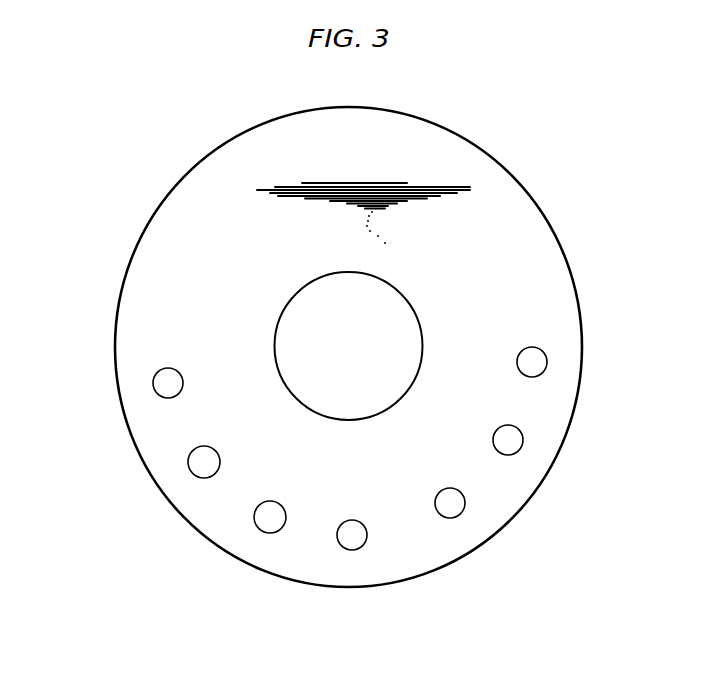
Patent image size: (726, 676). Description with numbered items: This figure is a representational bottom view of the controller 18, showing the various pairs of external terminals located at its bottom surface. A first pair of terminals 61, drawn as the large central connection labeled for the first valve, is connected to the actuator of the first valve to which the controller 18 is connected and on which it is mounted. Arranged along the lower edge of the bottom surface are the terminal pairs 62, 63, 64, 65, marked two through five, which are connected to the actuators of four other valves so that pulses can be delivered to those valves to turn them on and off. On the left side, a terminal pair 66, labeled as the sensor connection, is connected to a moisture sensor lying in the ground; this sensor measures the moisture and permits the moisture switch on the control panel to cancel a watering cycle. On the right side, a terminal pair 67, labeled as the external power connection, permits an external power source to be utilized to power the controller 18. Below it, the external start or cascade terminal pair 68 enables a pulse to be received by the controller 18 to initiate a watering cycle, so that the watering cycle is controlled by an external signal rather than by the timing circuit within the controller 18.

The controller 18 is at (580, 296).
The first pair of terminals 61 is at (313, 283).
The terminal pair 62 is at (194, 475).
The terminal pair 63 is at (263, 532).
The terminal pair 64 is at (352, 550).
The terminal pair 65 is at (456, 518).
The moisture sensor terminal pair 66 is at (153, 387).
The external power terminal pair 67 is at (547, 362).
The external start or cascade terminal pair 68 is at (522, 447).